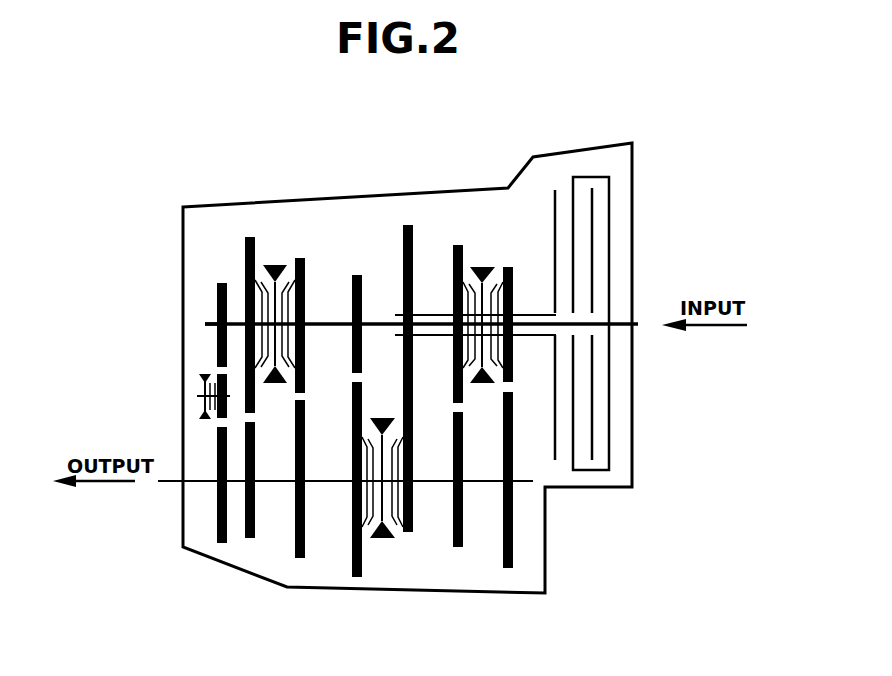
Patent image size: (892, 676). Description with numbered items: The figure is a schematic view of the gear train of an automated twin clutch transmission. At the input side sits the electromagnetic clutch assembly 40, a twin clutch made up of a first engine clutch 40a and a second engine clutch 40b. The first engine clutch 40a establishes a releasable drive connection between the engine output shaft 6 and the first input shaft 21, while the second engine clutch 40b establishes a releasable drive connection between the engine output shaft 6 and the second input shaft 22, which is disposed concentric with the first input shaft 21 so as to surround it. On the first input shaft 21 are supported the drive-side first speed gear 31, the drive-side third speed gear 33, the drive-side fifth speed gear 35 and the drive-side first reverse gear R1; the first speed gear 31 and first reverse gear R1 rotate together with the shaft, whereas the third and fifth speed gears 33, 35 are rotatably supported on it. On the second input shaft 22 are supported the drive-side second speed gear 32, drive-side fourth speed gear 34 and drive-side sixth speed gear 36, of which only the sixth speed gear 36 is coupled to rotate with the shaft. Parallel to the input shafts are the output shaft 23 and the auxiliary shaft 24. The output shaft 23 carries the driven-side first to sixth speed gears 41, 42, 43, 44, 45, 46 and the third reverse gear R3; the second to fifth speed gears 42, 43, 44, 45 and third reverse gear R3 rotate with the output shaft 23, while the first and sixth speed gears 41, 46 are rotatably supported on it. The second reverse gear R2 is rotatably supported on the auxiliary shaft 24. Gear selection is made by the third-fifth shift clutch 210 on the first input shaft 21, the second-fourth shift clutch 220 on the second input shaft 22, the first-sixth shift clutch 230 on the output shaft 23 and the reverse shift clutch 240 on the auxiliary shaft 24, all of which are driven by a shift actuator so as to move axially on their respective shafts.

The electromagnetic clutch assembly 40 is at (586, 138).
The first engine clutch 40a is at (593, 205).
The second engine clutch 40b is at (563, 197).
The engine output shaft 6 is at (637, 325).
The second input shaft 22 is at (531, 336).
The first input shaft 21 is at (207, 323).
The output shaft 23 is at (200, 480).
The auxiliary shaft 24 is at (199, 395).
The reverse shift clutch 240 is at (203, 374).
The drive-side first reverse gear R1 is at (221, 283).
The second reverse gear R2 is at (221, 372).
The third reverse gear R3 is at (218, 473).
The drive-side fifth speed gear 35 is at (244, 264).
The drive-side third speed gear 33 is at (304, 283).
The drive-side first speed gear 31 is at (362, 287).
The drive-side sixth speed gear 36 is at (403, 256).
The drive-side fourth speed gear 34 is at (454, 265).
The drive-side second speed gear 32 is at (509, 266).
The driven-side fifth speed gear 45 is at (250, 538).
The driven-side third speed gear 43 is at (300, 558).
The driven-side first speed gear 41 is at (353, 541).
The driven-side sixth speed gear 46 is at (407, 532).
The driven-side fourth speed gear 44 is at (457, 547).
The driven-side second speed gear 42 is at (508, 568).
The 3-5 shift clutch 210 is at (275, 384).
The 2-4 shift clutch 220 is at (482, 385).
The 1-6 shift clutch 230 is at (382, 418).